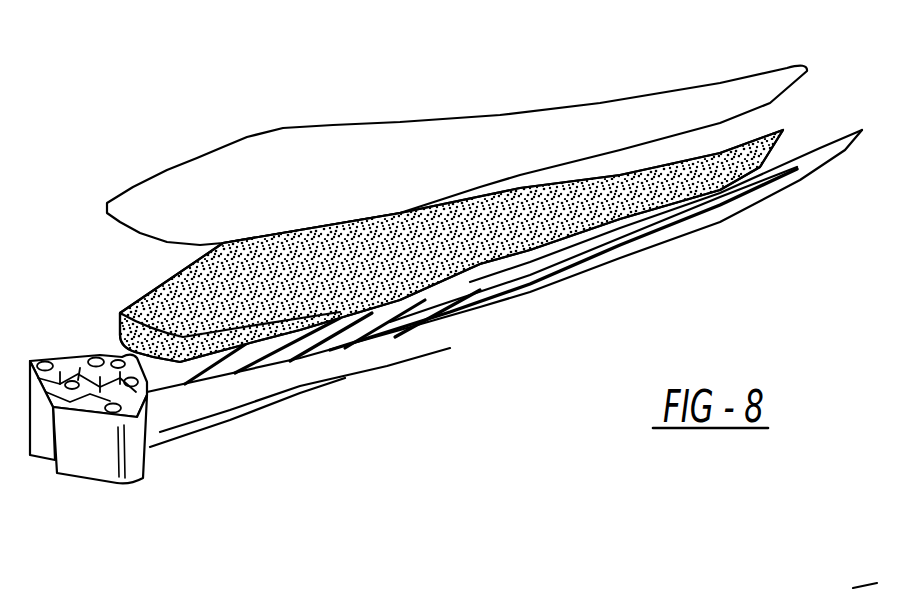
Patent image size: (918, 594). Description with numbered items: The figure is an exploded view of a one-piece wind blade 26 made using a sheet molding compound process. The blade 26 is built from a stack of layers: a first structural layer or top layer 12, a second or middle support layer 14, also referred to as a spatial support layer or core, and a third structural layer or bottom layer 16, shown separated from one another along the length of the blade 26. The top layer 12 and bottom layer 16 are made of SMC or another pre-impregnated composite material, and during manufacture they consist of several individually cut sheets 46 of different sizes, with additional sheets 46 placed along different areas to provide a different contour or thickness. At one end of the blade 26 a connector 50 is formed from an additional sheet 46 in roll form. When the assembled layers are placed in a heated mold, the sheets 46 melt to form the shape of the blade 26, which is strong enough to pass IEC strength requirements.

The top layer 12 is at (407, 155).
The middle support layer 14 is at (170, 305).
The bottom layer 16 is at (365, 362).
The one-piece wind blade 26 is at (446, 307).
The individually cut sheets 46 is at (828, 593).
The connector 50 is at (93, 450).